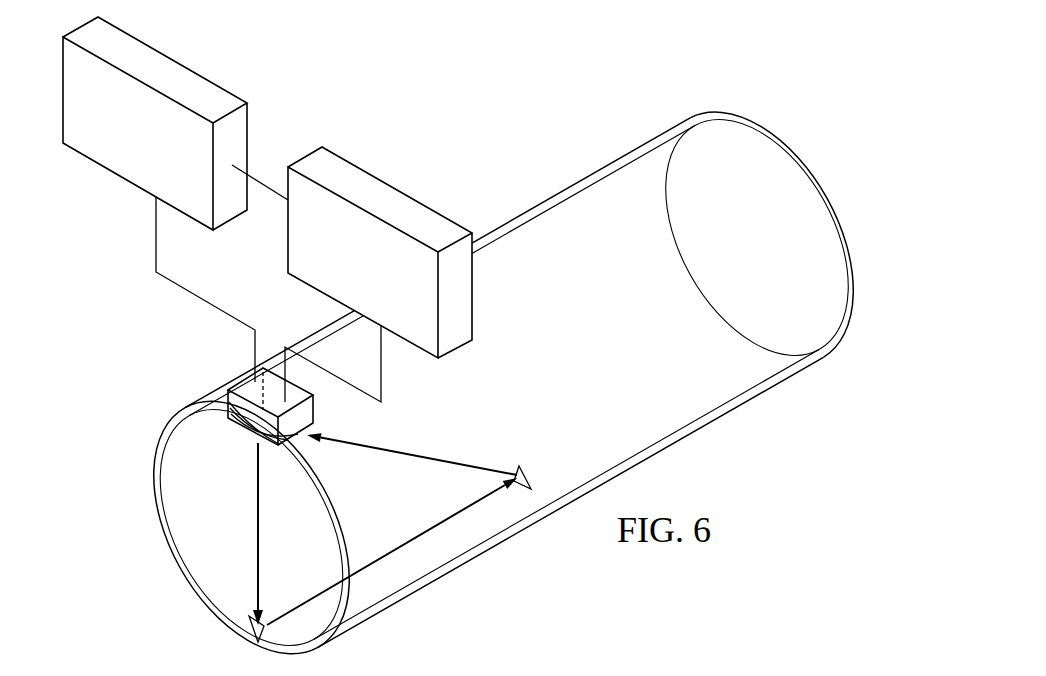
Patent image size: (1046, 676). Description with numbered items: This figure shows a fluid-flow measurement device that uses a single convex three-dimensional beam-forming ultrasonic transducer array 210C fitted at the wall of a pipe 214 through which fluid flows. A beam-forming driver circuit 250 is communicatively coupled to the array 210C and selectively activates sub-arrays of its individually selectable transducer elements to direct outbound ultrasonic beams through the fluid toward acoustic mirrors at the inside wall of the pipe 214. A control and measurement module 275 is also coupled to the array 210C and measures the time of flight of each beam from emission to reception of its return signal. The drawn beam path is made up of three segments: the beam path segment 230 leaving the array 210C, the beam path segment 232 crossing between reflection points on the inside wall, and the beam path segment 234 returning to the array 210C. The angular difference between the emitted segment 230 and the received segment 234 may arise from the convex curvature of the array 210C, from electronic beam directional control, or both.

The pipe 214 is at (160, 525).
The beam-forming driver circuit 250 is at (163, 77).
The control and measurement module 275 is at (388, 205).
The convex three-dimensional beam-forming ultrasonic transducer array 210C is at (240, 383).
The beam path segment 230 is at (258, 522).
The beam path segment 232 is at (403, 547).
The beam path segment 234 is at (425, 455).